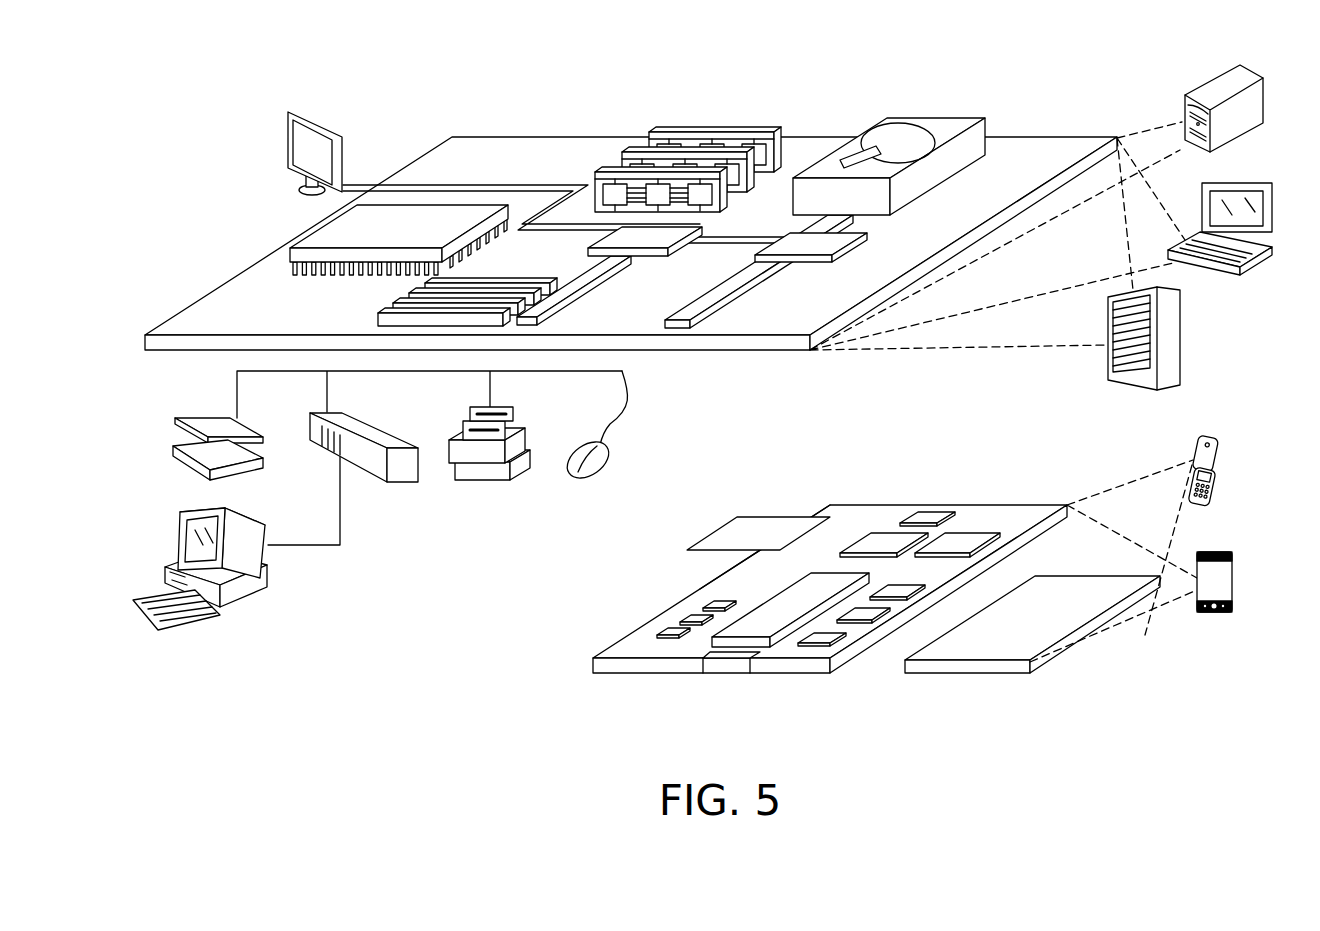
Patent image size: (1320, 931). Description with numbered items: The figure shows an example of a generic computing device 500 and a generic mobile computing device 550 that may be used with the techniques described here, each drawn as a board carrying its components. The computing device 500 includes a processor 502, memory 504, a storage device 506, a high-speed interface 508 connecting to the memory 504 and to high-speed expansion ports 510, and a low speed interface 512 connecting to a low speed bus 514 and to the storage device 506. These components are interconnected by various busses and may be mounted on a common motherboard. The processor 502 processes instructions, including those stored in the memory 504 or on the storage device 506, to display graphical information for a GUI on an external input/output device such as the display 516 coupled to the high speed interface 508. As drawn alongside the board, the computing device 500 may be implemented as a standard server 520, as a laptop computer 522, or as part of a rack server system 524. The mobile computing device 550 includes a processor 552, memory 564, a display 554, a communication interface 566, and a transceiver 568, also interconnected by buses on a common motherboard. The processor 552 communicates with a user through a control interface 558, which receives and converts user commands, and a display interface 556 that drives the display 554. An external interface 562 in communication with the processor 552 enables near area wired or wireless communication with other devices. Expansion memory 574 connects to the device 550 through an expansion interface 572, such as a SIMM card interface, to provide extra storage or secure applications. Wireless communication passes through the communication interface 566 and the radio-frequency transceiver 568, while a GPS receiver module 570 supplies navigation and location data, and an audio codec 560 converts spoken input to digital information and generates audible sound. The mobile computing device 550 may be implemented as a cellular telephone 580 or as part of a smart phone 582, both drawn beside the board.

The computing device 500 is at (404, 88).
The processor 502 is at (312, 234).
The memory 504 is at (718, 131).
The storage device 506 is at (927, 115).
The high-speed interface 508 is at (658, 236).
The high-speed expansion ports 510 is at (403, 305).
The low speed interface 512 is at (788, 241).
The low speed bus 514 is at (684, 325).
The display 516 is at (290, 110).
The standard server 520 is at (1201, 90).
The laptop computer 522 is at (1252, 182).
The rack server system 524 is at (1180, 339).
The mobile computing device 550 is at (545, 680).
The processor 552 is at (762, 612).
The display 554 is at (1068, 583).
The display interface 556 is at (835, 638).
The control interface 558 is at (870, 615).
The audio codec 560 is at (900, 586).
The external interface 562 is at (727, 660).
The memory 564 is at (688, 616).
The communication interface 566 is at (883, 535).
The transceiver 568 is at (964, 537).
The GPS receiver module 570 is at (928, 514).
The expansion interface 572 is at (813, 512).
The expansion memory 574 is at (738, 513).
The cellular telephone 580 is at (1200, 437).
The smart phone 582 is at (1207, 552).